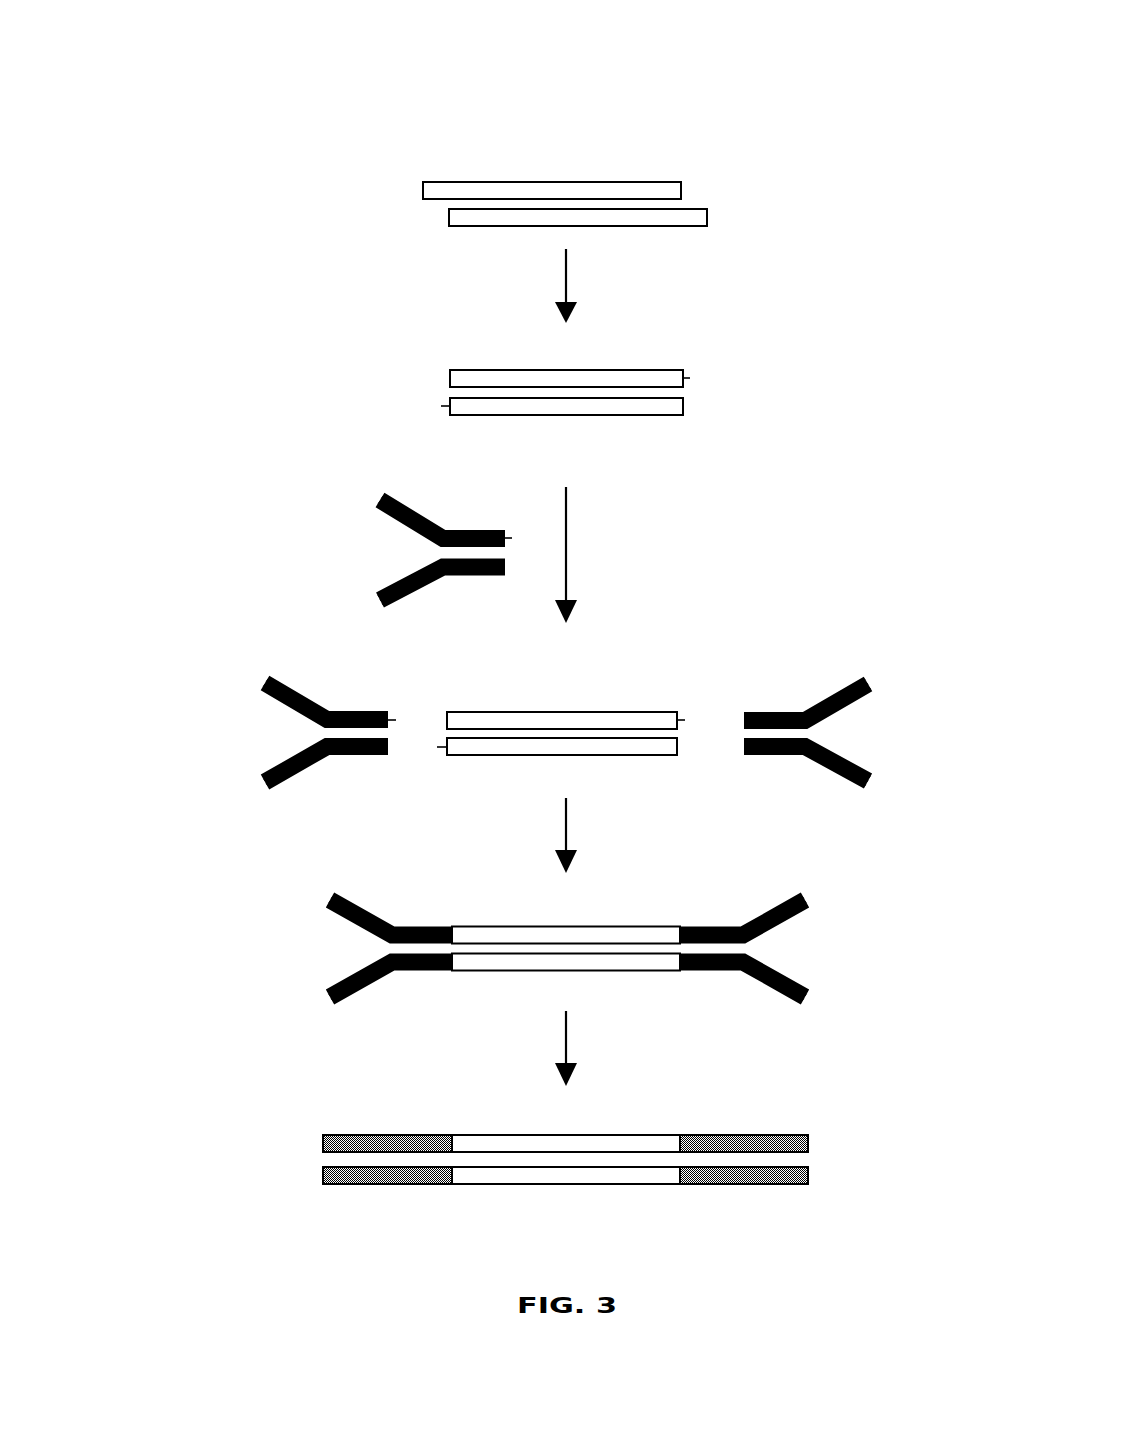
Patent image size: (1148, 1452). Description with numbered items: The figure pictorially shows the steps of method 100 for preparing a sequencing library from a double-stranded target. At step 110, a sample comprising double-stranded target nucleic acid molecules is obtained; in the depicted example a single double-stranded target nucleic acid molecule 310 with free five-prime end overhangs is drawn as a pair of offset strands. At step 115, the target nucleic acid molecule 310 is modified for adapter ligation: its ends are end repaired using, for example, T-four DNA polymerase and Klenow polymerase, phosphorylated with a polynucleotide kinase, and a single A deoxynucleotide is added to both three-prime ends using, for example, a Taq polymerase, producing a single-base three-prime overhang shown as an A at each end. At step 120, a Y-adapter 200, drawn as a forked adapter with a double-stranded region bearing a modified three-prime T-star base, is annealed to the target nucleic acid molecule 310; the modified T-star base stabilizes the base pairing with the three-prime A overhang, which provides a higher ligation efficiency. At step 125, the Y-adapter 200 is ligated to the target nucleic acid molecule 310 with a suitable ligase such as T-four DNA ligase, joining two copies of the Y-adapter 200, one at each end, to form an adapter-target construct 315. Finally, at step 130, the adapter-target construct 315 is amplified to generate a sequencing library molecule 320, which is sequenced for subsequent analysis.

The method 100 is at (207, 82).
The step of obtaining a sample 110 is at (340, 160).
The step of modifying the target nucleic acid molecule 115 is at (340, 307).
The step of annealing an adapter 120 is at (260, 430).
The step of ligating the Y-adapter 125 is at (238, 837).
The step of amplifying the adapter-target construct 130 is at (238, 1088).
The Y-adapter 200 is at (372, 501).
The target nucleic acid molecule 310 is at (603, 170).
The adapter-target construct 315 is at (748, 884).
The sequencing library molecule 320 is at (748, 1116).